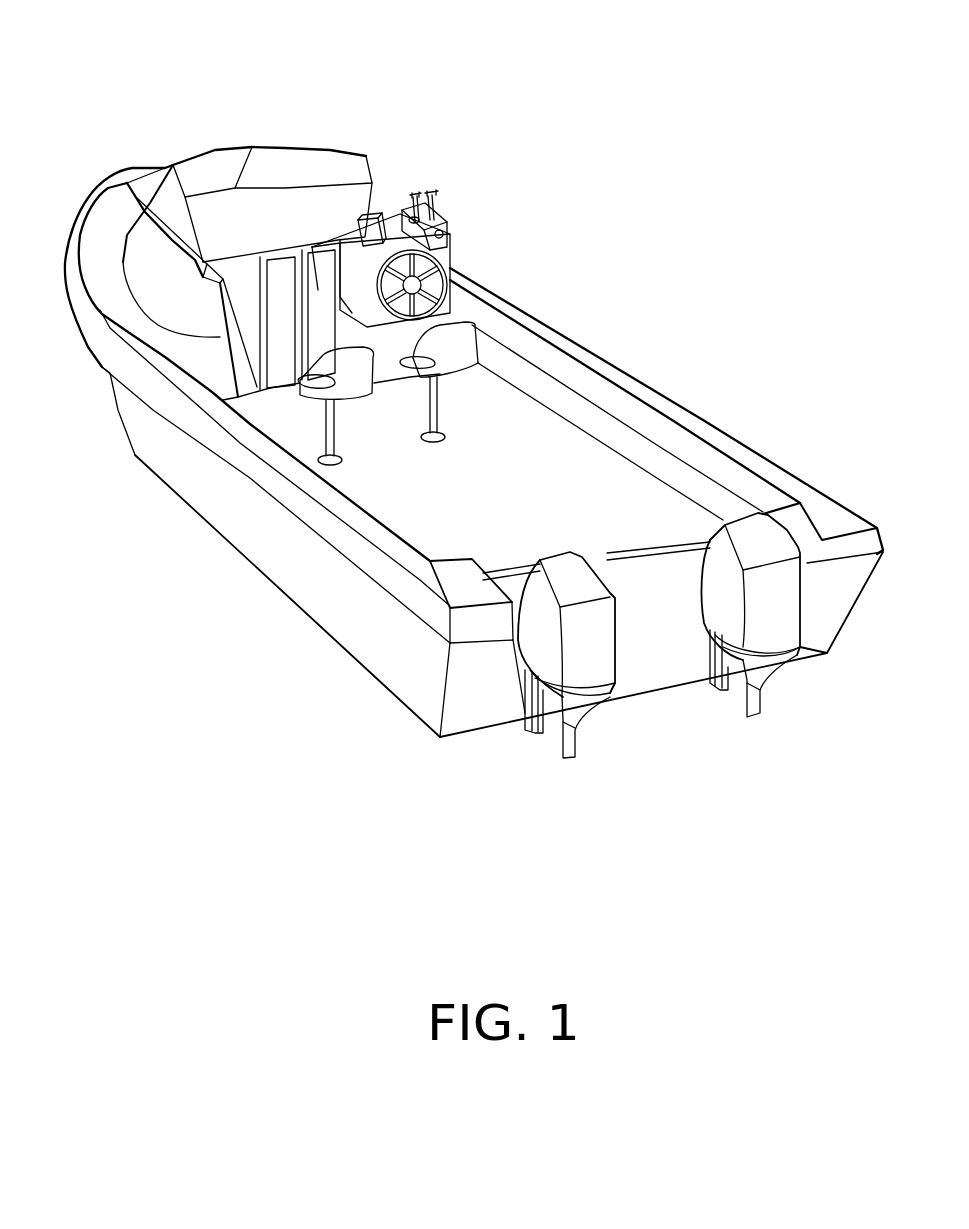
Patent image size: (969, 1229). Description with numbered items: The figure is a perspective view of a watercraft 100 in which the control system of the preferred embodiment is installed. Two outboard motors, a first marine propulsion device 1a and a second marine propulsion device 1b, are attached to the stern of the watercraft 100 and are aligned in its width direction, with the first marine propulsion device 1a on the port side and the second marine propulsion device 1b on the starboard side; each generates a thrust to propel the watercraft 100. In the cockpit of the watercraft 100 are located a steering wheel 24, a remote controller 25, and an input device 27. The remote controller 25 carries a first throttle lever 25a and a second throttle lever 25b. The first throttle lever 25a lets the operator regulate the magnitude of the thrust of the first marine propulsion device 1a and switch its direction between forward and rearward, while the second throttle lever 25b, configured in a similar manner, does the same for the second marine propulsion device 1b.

The watercraft 100 is at (680, 320).
The first marine propulsion device 1a is at (587, 663).
The second marine propulsion device 1b is at (787, 615).
The steering wheel 24 is at (453, 270).
The remote controller 25 is at (447, 203).
The first throttle lever 25a is at (413, 193).
The second throttle lever 25b is at (428, 192).
The input device 27 is at (358, 218).